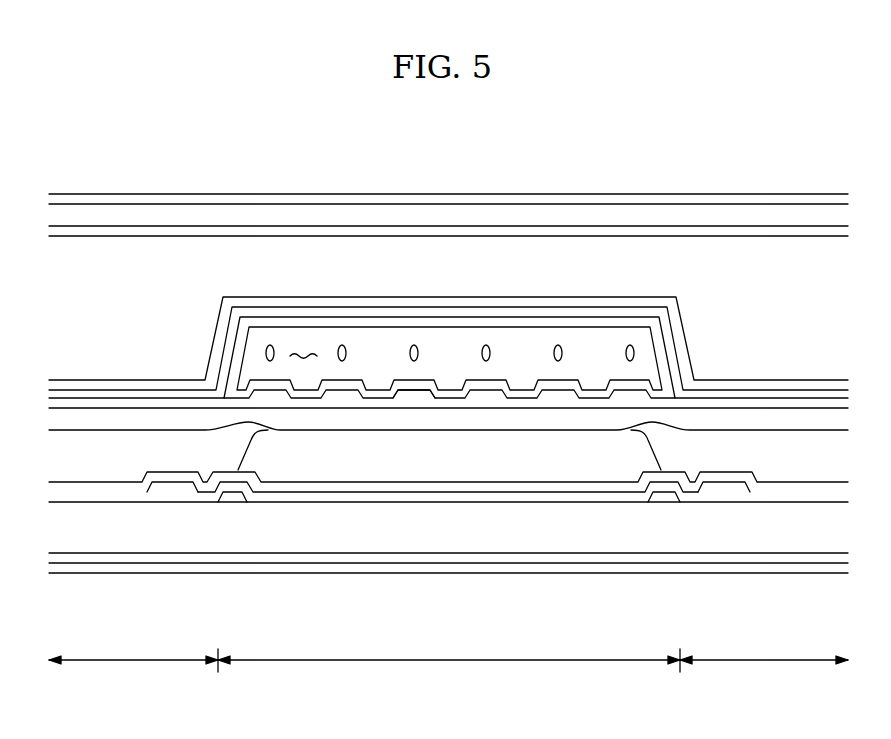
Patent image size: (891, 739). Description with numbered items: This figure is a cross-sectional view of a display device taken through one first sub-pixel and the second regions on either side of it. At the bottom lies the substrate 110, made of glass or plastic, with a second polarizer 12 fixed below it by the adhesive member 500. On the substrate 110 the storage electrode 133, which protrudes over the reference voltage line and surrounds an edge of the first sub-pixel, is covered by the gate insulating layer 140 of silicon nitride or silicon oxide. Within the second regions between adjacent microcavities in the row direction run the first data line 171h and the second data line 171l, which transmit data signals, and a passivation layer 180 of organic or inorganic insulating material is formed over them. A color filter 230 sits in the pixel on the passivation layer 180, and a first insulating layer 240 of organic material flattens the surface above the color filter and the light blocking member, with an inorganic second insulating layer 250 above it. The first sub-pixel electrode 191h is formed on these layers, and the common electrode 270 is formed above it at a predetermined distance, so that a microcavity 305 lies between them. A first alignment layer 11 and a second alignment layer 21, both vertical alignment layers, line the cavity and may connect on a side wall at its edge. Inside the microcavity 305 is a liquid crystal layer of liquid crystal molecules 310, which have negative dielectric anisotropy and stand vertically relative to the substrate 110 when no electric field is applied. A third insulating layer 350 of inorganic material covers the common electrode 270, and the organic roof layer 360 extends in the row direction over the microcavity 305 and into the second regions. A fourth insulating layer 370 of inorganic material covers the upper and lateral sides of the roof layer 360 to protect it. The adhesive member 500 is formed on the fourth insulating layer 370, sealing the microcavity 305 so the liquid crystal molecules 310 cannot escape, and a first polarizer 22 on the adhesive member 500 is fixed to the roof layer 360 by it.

The first polarizer 22 is at (822, 202).
The adhesive member 500 is at (762, 215).
The fourth insulating layer 370 is at (670, 232).
The roof layer 360 is at (373, 262).
The third insulating layer 350 is at (590, 303).
The common electrode 270 is at (518, 313).
The second alignment layer 21 is at (452, 322).
The microcavity 305 is at (301, 352).
The liquid crystal molecules 310 is at (348, 354).
The first alignment layer 11 is at (525, 392).
The first sub-pixel electrode 191h is at (408, 393).
The second insulating layer 250 is at (820, 403).
The first insulating layer 240 is at (355, 420).
The color filter 230 is at (308, 462).
The passivation layer 180 is at (448, 581).
The gate insulating layer 140 is at (618, 495).
The first data line 171h is at (179, 485).
The second data line 171l is at (723, 486).
The storage electrode 133 is at (233, 494).
The substrate 110 is at (126, 538).
The second polarizer 12 is at (495, 568).